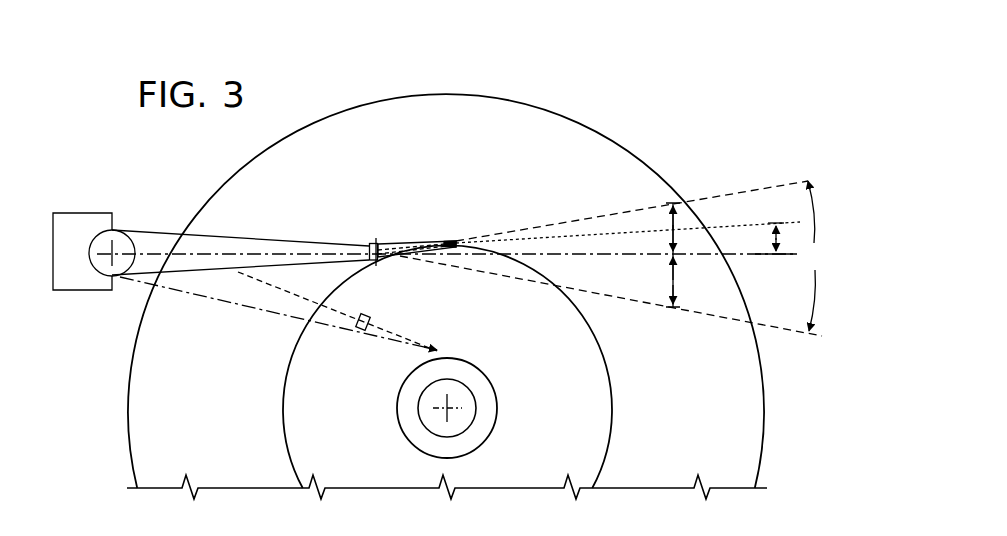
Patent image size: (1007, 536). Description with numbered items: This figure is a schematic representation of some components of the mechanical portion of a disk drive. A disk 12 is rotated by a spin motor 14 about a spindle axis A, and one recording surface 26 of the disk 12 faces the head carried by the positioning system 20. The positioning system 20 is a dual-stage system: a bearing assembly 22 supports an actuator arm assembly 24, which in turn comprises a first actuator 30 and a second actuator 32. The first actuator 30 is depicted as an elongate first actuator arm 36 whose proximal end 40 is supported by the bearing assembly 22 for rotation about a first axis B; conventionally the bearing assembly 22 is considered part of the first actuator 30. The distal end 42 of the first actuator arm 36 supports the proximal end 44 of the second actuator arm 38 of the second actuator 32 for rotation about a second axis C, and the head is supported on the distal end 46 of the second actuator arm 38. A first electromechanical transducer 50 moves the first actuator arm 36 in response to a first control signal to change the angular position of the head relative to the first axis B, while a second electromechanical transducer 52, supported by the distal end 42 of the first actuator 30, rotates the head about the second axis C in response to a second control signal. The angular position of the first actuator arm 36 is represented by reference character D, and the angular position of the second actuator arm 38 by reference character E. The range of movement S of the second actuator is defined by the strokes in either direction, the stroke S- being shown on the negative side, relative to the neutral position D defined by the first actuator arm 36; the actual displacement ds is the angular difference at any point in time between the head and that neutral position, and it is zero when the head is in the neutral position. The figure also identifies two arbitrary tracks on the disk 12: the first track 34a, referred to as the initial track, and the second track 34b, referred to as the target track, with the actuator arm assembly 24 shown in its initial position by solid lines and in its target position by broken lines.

The disk 12 is at (490, 113).
The spin motor 14 is at (430, 400).
The positioning system 20 is at (330, 187).
The bearing assembly 22 is at (118, 240).
The actuator arm assembly 24 is at (275, 222).
The recording surface 26 is at (463, 166).
The first actuator 30 is at (265, 180).
The second actuator 32 is at (436, 305).
The first track 34a is at (284, 407).
The second track 34b is at (397, 422).
The first actuator arm 36 is at (213, 243).
The second actuator arm 38 is at (415, 257).
The proximal end of the first actuator arm 40 is at (146, 226).
The distal end of the first actuator arm 42 is at (366, 243).
The proximal end of the second actuator arm 44 is at (384, 246).
The distal end of the second actuator arm 46 is at (443, 239).
The first electromechanical transducer 50 is at (73, 222).
The second electromechanical transducer 52 is at (376, 240).
The spindle axis A is at (445, 410).
The first axis B is at (106, 258).
The second axis C is at (378, 262).
The angular position of the first actuator arm D is at (756, 257).
The angular position of the second actuator arm E is at (747, 223).
The range of movement S is at (815, 256).
The stroke in negative direction S- is at (673, 278).
The actual displacement ds is at (775, 240).